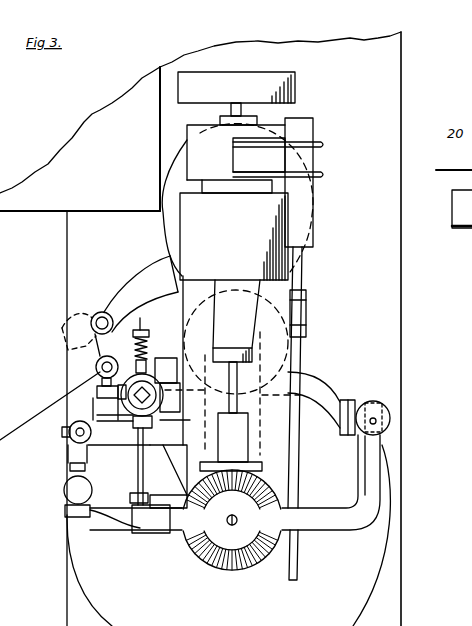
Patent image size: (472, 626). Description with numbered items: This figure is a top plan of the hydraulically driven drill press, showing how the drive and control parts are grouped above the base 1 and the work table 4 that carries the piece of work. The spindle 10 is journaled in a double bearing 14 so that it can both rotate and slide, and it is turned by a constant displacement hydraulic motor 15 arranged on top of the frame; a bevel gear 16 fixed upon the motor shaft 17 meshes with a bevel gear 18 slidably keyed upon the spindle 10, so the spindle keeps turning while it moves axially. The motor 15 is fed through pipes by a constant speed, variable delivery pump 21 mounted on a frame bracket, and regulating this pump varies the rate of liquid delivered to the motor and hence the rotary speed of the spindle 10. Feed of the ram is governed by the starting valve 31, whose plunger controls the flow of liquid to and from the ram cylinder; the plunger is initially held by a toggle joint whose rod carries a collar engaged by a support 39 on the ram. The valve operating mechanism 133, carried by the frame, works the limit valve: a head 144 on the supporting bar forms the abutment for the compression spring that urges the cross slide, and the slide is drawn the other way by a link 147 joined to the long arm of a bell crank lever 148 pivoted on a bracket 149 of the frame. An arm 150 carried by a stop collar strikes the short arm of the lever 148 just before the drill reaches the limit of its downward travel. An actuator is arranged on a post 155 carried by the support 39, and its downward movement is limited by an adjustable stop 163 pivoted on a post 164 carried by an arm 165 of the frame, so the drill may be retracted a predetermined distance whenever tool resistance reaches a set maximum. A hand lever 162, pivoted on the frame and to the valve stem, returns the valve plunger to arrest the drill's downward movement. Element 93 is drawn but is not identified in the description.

The base 1 is at (388, 612).
The work table 4 is at (91, 570).
The spindle 10 is at (230, 526).
The double bearing 14 is at (232, 397).
The constant displacement hydraulic motor 15 is at (237, 284).
The bevel gear 16 is at (297, 477).
The motor shaft 17 is at (233, 388).
The bevel gear 18 is at (231, 571).
The constant speed, variable delivery pump 21 is at (250, 159).
The starting valve 31 is at (358, 413).
The support 39 is at (353, 530).
The roller 93 is at (72, 440).
The valve operating mechanism 133 is at (158, 357).
The head 144 is at (132, 345).
The link 147 is at (138, 460).
The bell crank lever 148 is at (130, 490).
The bracket 149 is at (165, 496).
The arm 150 is at (157, 534).
The post 155 is at (106, 369).
The hand lever 162 is at (292, 581).
The adjustable stop 163 is at (102, 340).
The post 164 is at (92, 319).
The arm 165 is at (120, 306).